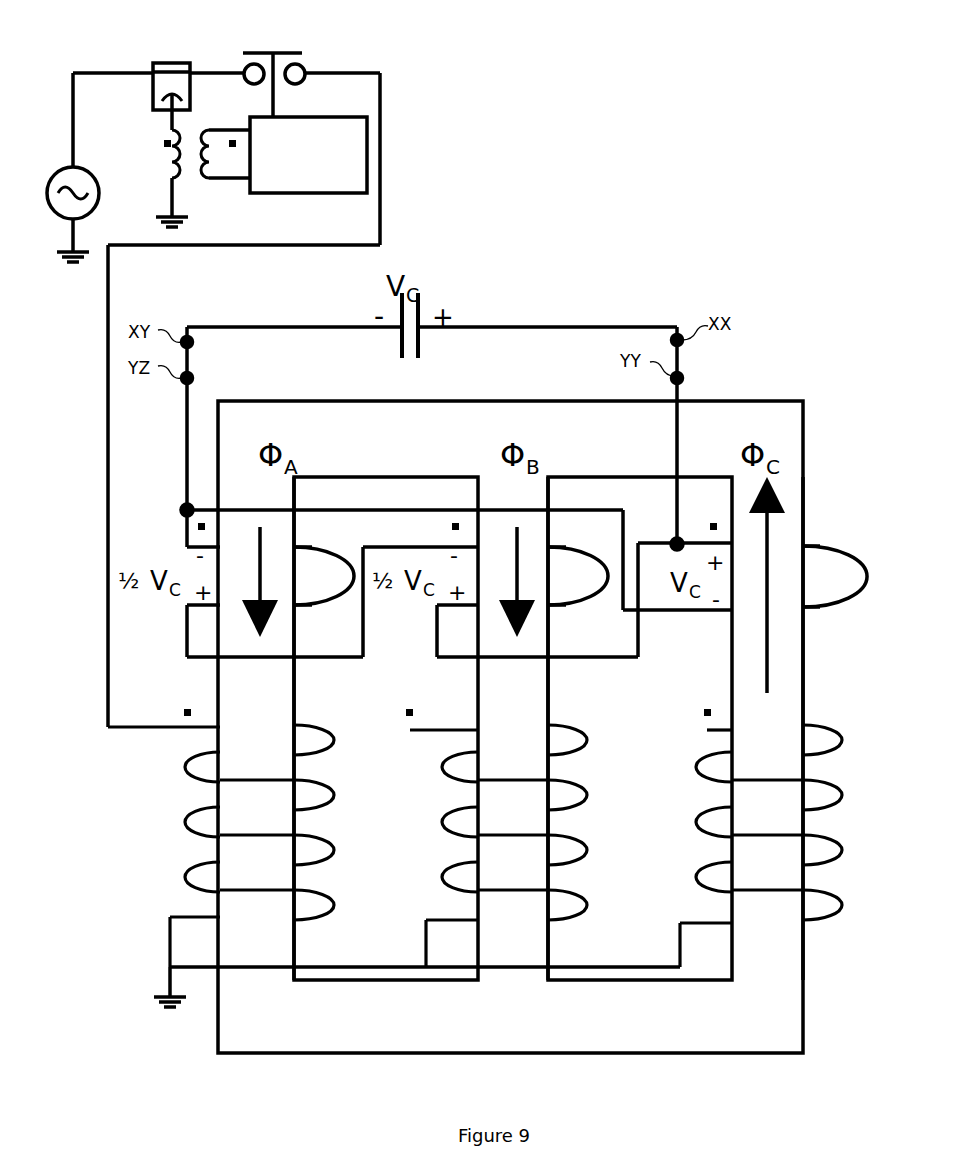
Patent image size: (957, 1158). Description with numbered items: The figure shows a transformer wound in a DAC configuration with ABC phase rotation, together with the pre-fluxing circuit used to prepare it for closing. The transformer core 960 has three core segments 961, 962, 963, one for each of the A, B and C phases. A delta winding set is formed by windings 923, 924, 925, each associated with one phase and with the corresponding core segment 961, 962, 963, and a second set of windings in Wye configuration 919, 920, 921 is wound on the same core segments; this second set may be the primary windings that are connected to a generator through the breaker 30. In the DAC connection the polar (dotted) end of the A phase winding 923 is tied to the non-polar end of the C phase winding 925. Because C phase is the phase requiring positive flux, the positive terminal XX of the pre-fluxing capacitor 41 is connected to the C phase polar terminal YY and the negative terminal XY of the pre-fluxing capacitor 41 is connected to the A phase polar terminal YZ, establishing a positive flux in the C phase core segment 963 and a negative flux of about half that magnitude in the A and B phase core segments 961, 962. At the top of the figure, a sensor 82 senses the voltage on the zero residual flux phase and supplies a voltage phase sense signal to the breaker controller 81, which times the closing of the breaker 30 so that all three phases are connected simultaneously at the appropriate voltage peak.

The sensor 82 is at (170, 63).
The breaker 30 is at (270, 53).
The breaker controller 81 is at (288, 193).
The pre-fluxing capacitor 41 is at (422, 303).
The transformer core 960 is at (750, 399).
The core segment 961 is at (296, 683).
The core segment 962 is at (550, 683).
The core segment 963 is at (792, 680).
The winding 923 is at (334, 532).
The winding 924 is at (572, 546).
The winding 925 is at (822, 546).
The winding 919 is at (333, 741).
The winding 920 is at (586, 745).
The winding 921 is at (842, 745).